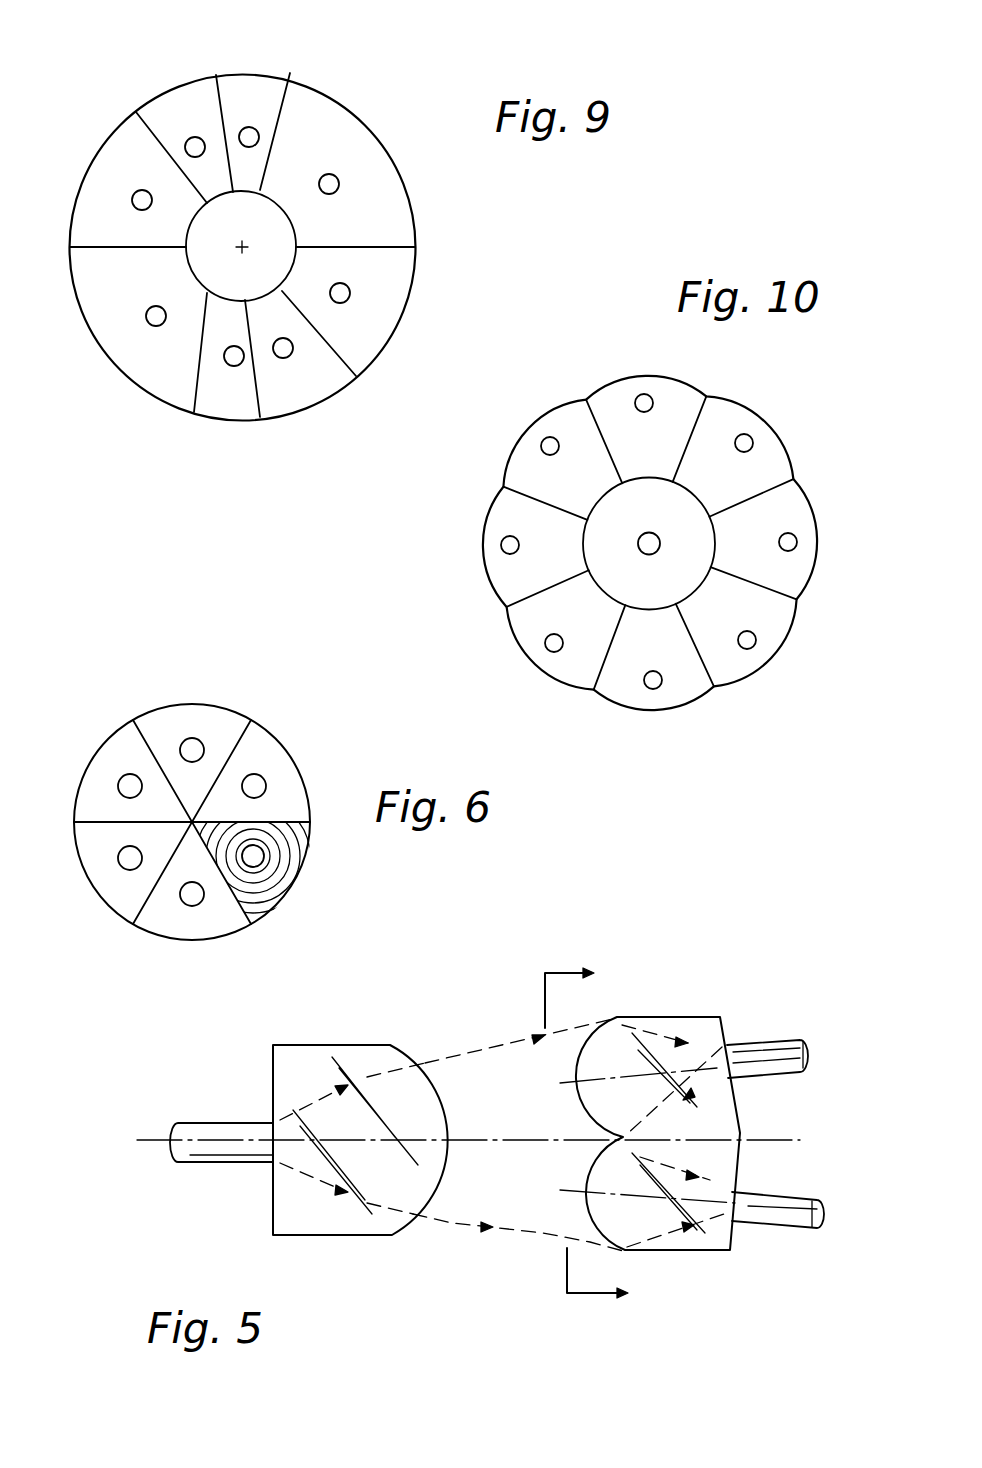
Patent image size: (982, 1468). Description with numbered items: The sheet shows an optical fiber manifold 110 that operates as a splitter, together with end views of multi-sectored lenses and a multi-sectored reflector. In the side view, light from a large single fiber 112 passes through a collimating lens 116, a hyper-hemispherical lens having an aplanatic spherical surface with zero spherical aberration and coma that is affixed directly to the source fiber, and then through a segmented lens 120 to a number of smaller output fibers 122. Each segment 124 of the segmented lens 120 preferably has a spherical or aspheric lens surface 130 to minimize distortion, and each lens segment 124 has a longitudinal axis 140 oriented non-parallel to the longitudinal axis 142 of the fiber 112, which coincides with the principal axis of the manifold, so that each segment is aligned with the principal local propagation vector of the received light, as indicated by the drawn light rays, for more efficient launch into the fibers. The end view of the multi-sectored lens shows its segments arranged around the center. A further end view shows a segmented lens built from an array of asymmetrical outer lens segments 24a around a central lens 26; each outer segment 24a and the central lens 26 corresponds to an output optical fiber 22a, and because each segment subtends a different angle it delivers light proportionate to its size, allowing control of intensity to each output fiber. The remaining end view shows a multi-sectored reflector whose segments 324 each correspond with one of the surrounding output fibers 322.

In FIG. 9, the output optical fiber 22a is at (250, 127).
In FIG. 9, the outer lens segment 24a is at (147, 110).
In FIG. 9, the central lens 26 is at (217, 280).
In FIG. 10, the output fiber 322 is at (553, 437).
In FIG. 10, the reflector segment 324 is at (723, 412).
In FIG. 5, the optical fiber manifold 110 is at (432, 1318).
In FIG. 5, the single fiber 112 is at (232, 1157).
In FIG. 5, the collimating lens 116 is at (337, 1212).
In FIG. 6, the segmented lens 120 is at (99, 728).
In FIG. 5, the segmented lens 120 is at (688, 1005).
In FIG. 6, the output fiber 122 is at (139, 777).
In FIG. 5, the output fiber 122 is at (777, 1040).
In FIG. 6, the lens segment 124 is at (252, 733).
In FIG. 5, the lens segment 124 is at (713, 1023).
In FIG. 5, the lens surface 130 is at (582, 1107).
In FIG. 5, the longitudinal axis of lens segment 140 is at (808, 1056).
In FIG. 5, the longitudinal axis of fiber 142 is at (156, 1140).